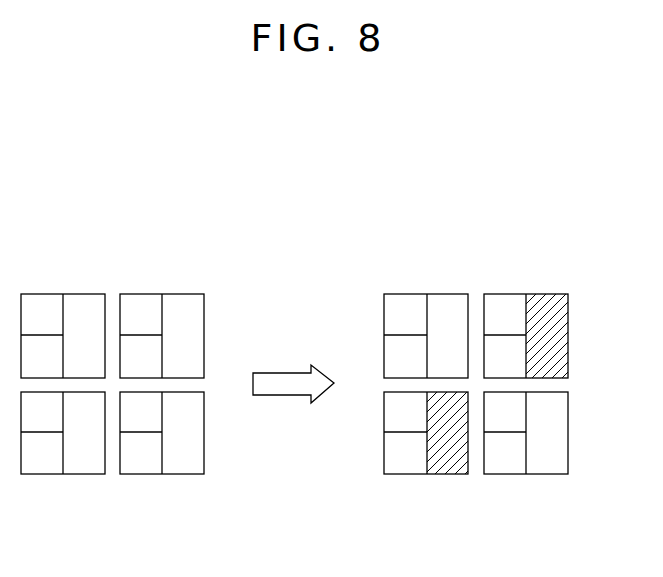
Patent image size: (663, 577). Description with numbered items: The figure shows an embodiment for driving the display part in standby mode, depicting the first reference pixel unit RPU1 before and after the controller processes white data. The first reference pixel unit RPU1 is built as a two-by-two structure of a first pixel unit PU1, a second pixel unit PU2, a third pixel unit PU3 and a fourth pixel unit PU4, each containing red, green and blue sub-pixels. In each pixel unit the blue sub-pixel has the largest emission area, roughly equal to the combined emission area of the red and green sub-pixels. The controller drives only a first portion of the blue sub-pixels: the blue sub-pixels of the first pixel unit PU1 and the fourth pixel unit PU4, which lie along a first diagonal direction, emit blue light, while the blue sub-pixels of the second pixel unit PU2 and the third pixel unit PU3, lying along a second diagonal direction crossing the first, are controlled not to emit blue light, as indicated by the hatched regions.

The first reference pixel unit RPU1 is at (295, 350).
The first pixel unit PU1 is at (50, 293).
The second pixel unit PU2 is at (172, 293).
The third pixel unit PU3 is at (71, 475).
The fourth pixel unit PU4 is at (173, 475).